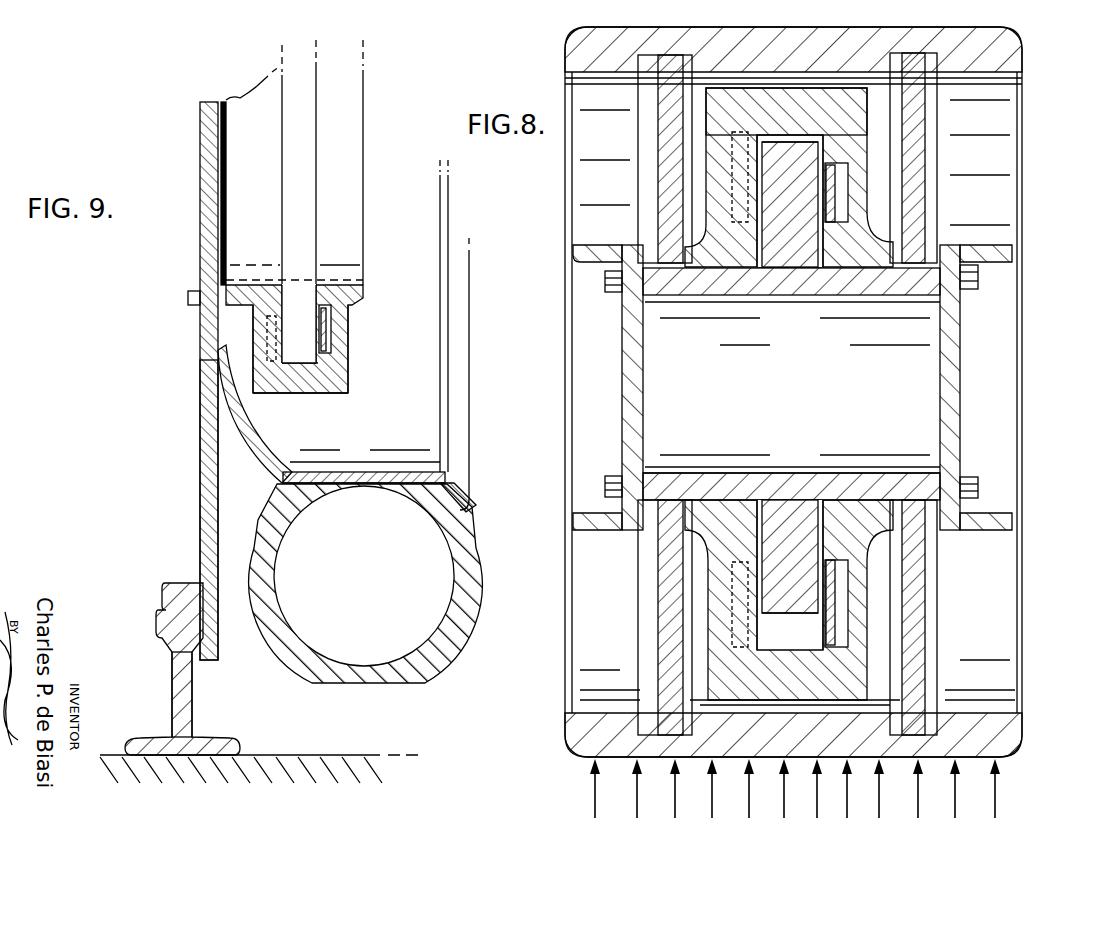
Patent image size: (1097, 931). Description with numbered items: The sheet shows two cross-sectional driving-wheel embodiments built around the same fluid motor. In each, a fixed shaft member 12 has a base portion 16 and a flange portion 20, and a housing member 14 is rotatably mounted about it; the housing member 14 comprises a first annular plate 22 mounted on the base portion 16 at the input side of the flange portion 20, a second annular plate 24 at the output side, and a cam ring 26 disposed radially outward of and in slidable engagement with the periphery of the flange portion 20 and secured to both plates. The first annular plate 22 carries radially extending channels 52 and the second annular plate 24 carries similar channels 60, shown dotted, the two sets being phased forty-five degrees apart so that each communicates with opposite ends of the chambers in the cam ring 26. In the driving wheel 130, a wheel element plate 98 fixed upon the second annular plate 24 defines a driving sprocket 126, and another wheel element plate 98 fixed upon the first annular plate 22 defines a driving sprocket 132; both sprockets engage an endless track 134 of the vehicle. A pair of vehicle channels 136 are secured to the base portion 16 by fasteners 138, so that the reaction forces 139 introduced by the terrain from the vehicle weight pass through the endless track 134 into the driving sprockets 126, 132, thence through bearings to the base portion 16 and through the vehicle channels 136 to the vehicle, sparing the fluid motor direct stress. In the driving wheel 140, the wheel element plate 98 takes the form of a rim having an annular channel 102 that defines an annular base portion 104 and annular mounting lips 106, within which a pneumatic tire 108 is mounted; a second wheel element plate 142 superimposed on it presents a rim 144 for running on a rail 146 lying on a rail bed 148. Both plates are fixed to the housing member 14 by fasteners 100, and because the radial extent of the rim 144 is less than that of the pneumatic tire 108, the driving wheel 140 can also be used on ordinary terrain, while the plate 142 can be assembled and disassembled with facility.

In FIG. 8, the shaft member 12 is at (778, 470).
In FIG. 9, the housing member 14 is at (367, 232).
In FIG. 8, the housing member 14 is at (717, 197).
In FIG. 8, the base portion 16 is at (710, 300).
In FIG. 8, the flange portion 20 is at (801, 221).
In FIG. 9, the first annular plate 22 is at (335, 394).
In FIG. 8, the first annular plate 22 is at (870, 270).
In FIG. 9, the second annular plate 24 is at (270, 394).
In FIG. 8, the second annular plate 24 is at (752, 270).
In FIG. 9, the cam ring 26 is at (306, 394).
In FIG. 8, the cam ring 26 is at (800, 133).
In FIG. 9, the radially extending channels 52 is at (335, 343).
In FIG. 8, the radially extending channels 52 is at (838, 160).
In FIG. 9, the radially extending channels 60 is at (266, 342).
In FIG. 8, the radially extending channels 60 is at (740, 152).
In FIG. 9, the wheel element plate 98 is at (228, 214).
In FIG. 8, the wheel element plate 98 is at (657, 198).
In FIG. 9, the fasteners 100 is at (187, 297).
In FIG. 9, the annular channel 102 is at (378, 486).
In FIG. 9, the annular base portion 104 is at (373, 471).
In FIG. 9, the annular mounting lips 106 is at (462, 494).
In FIG. 9, the pneumatic tire 108 is at (372, 672).
In FIG. 8, the driving sprocket 126 is at (662, 120).
In FIG. 8, the driving wheel 130 is at (1026, 218).
In FIG. 8, the driving sprocket 132 is at (922, 116).
In FIG. 8, the endless track 134 is at (1005, 60).
In FIG. 8, the vehicle channels 136 is at (643, 400).
In FIG. 8, the fasteners 138 is at (604, 283).
In FIG. 8, the reaction forces 139 is at (594, 792).
In FIG. 9, the driving wheel 140 is at (199, 240).
In FIG. 9, the wheel element plate 142 is at (199, 503).
In FIG. 9, the rim 144 is at (160, 596).
In FIG. 9, the rail 146 is at (192, 690).
In FIG. 9, the rail bed 148 is at (230, 760).